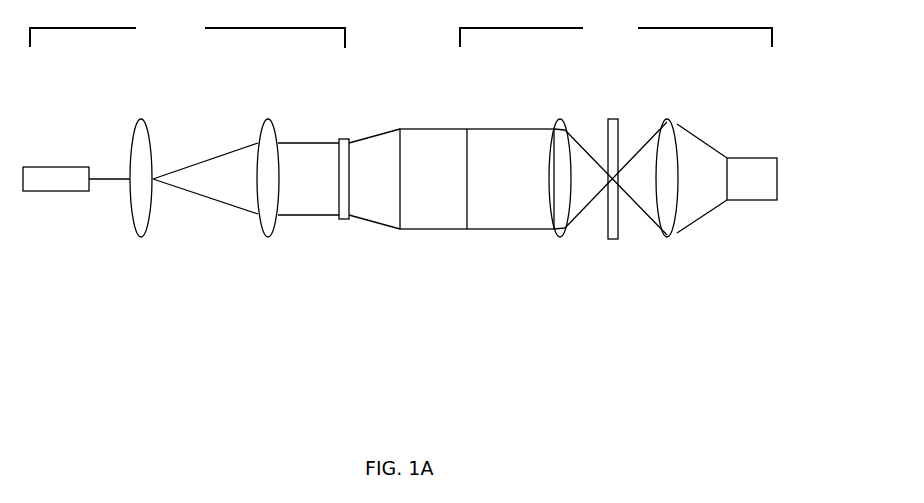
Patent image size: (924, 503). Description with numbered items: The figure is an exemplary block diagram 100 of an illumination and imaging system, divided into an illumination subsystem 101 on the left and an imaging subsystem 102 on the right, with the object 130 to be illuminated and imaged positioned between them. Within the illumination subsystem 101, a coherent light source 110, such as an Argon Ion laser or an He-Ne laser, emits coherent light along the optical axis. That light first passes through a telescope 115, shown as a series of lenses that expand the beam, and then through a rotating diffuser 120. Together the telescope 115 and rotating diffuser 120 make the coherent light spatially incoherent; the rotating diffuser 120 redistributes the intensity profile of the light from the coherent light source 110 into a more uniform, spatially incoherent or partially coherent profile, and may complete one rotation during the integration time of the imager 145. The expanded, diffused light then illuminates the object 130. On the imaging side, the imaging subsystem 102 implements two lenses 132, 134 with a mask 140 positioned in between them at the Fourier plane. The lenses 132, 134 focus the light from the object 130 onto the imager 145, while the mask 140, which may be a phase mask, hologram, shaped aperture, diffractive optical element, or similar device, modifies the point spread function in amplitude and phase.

The block diagram 100 is at (437, 366).
The illumination subsystem 101 is at (187, 33).
The imaging subsystem 102 is at (616, 32).
The coherent light source 110 is at (55, 166).
The telescope 115 is at (299, 245).
The rotating diffuser 120 is at (347, 212).
The object 130 is at (445, 220).
The first lens 132 is at (566, 135).
The second lens 134 is at (672, 135).
The mask 140 is at (614, 228).
The imager 145 is at (732, 195).